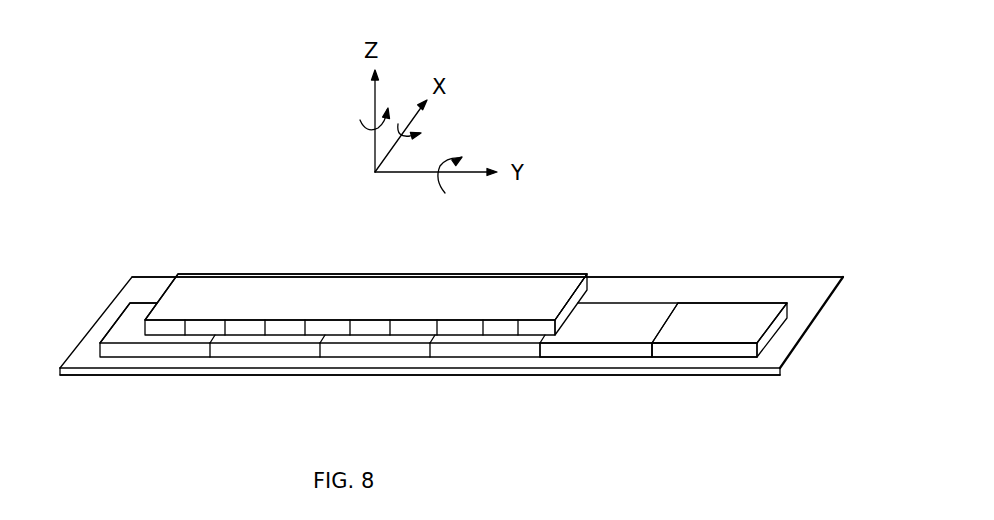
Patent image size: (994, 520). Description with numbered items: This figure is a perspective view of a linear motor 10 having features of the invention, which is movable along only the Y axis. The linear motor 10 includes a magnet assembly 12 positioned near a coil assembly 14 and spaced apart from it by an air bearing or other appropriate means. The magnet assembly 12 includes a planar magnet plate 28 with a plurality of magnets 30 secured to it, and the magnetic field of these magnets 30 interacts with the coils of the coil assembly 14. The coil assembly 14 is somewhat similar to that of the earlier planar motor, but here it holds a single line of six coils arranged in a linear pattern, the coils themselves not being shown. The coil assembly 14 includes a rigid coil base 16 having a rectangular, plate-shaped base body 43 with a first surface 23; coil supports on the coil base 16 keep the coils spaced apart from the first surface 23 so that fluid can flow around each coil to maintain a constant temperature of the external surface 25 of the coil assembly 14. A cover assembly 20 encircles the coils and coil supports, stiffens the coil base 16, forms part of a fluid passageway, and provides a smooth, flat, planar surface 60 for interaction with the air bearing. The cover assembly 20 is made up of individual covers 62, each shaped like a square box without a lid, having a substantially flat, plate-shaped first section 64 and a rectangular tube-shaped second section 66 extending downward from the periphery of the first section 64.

The linear motor 10 is at (597, 215).
The magnet assembly 12 is at (386, 291).
The coil assembly 14 is at (815, 270).
The coil base 16 is at (805, 312).
The cover assembly 20 is at (679, 299).
The first surface 23 is at (787, 357).
The external surface 25 is at (153, 353).
The magnet plate 28 is at (495, 290).
The magnets 30 is at (573, 305).
The base body 43 is at (372, 376).
The planar surface 60 is at (132, 322).
The cover 62 is at (740, 318).
The first section 64 is at (705, 318).
The second section 66 is at (702, 352).